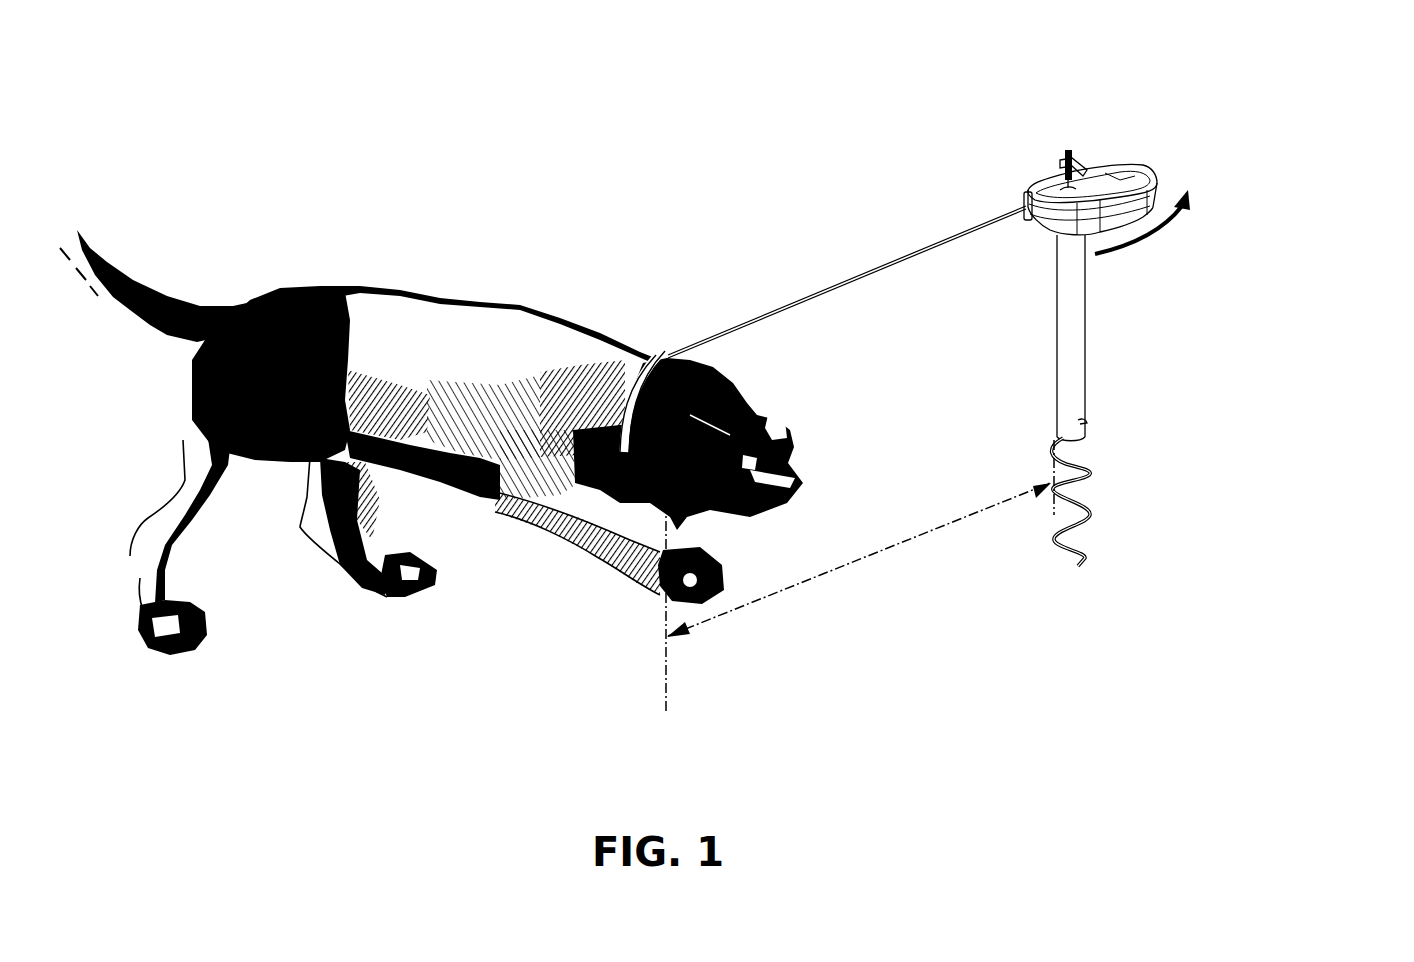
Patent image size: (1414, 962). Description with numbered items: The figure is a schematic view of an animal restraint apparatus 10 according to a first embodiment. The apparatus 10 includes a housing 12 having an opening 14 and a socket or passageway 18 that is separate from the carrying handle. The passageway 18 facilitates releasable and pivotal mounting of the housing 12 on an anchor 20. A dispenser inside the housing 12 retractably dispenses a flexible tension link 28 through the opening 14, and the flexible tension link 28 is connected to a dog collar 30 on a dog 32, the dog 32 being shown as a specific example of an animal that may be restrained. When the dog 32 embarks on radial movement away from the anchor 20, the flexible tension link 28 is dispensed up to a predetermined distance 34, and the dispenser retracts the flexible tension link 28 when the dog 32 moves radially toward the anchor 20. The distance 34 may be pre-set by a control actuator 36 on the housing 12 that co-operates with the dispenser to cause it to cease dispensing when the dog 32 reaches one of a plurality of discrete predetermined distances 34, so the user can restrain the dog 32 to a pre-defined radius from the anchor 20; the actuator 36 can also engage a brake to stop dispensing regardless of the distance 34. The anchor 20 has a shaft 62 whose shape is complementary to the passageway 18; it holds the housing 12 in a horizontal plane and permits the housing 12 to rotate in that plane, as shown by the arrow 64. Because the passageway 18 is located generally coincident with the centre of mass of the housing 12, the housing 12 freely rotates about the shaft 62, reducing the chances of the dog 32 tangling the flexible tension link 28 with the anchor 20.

The animal restraint apparatus 10 is at (1362, 108).
The housing 12 is at (1048, 186).
The opening 14 is at (1026, 205).
The socket or passageway 18 is at (1068, 187).
The anchor 20 is at (1075, 330).
The flexible tension link 28 is at (838, 283).
The dog collar 30 is at (650, 350).
The dog 32 is at (556, 300).
The predetermined distance 34 is at (893, 540).
The control actuator 36 is at (1095, 190).
The shaft 62 is at (1075, 156).
The arrow 64 is at (1155, 240).